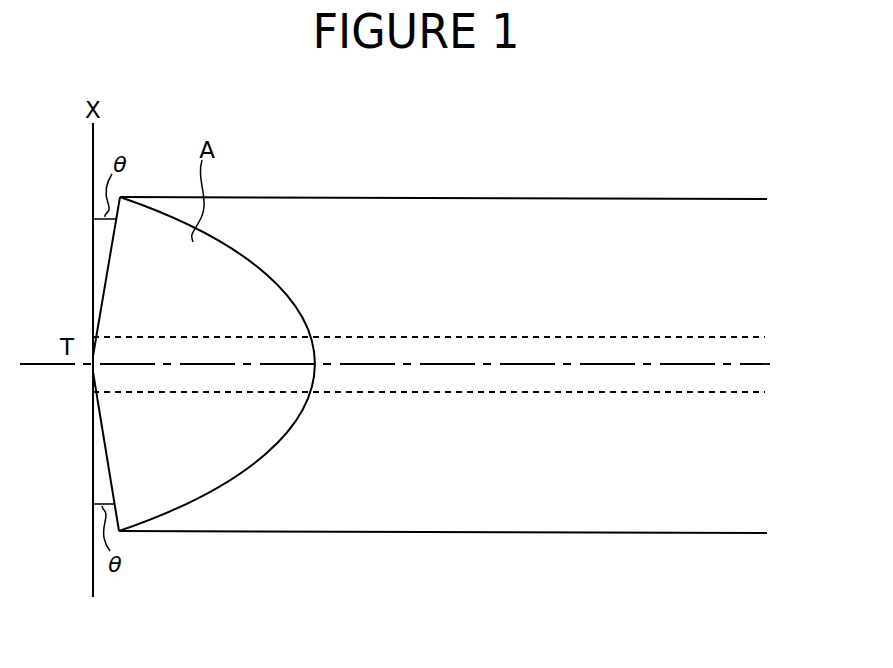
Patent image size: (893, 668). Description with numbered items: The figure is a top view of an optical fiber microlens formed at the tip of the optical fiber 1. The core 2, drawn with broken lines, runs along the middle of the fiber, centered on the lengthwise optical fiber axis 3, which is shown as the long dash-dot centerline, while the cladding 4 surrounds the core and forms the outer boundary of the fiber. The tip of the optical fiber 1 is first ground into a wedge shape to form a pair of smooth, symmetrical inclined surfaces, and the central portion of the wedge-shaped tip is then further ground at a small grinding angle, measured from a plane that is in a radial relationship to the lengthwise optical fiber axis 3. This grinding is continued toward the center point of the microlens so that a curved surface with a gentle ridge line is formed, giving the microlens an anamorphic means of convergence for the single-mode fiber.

The optical fiber 1 is at (508, 190).
The core 2 is at (558, 351).
The lengthwise optical fiber axis 3 is at (648, 365).
The cladding 4 is at (577, 518).